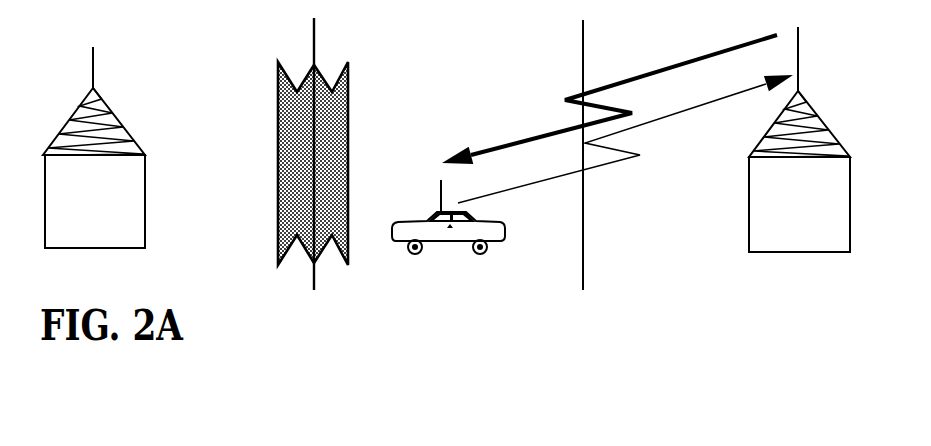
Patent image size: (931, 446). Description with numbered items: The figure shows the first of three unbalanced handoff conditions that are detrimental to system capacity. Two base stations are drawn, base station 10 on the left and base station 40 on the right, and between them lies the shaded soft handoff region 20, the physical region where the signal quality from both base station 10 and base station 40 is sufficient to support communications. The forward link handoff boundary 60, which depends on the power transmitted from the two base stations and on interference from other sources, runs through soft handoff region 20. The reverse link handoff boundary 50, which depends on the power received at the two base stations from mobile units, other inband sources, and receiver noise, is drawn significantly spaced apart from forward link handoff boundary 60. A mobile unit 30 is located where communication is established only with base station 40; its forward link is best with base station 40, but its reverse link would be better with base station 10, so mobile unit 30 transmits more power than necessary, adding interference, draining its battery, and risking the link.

The base station 10 is at (73, 115).
The soft handoff region 20 is at (278, 85).
The forward link handoff boundary 60 is at (314, 45).
The mobile unit 30 is at (456, 250).
The reverse link handoff boundary 50 is at (583, 45).
The base station 40 is at (821, 120).